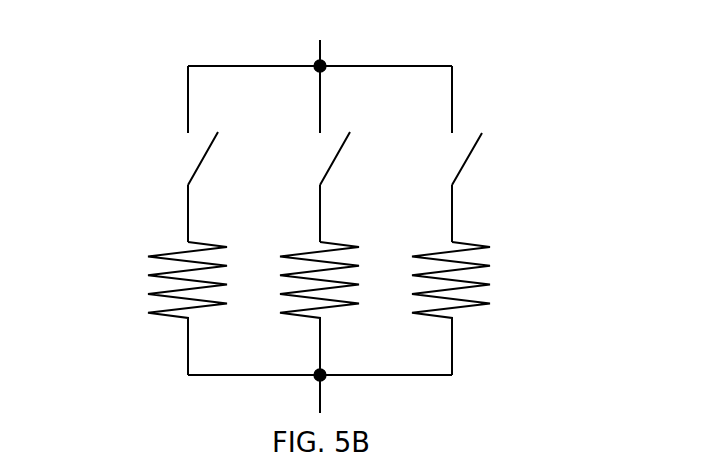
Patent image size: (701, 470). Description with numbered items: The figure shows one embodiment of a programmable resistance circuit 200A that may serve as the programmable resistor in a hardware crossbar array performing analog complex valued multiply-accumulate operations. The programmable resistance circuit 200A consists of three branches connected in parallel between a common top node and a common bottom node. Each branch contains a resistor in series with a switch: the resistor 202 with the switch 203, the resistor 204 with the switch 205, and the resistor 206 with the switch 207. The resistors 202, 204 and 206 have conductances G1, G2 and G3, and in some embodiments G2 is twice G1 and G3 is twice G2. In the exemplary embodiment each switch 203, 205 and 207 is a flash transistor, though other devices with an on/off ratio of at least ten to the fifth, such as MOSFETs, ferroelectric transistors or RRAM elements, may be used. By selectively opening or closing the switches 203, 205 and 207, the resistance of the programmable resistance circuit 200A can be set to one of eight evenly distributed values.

The programmable resistance circuit 200A is at (285, 32).
The resistor 202 is at (135, 279).
The switch 203 is at (154, 158).
The resistor 204 is at (268, 260).
The switch 205 is at (294, 158).
The resistor 206 is at (504, 279).
The switch 207 is at (420, 158).